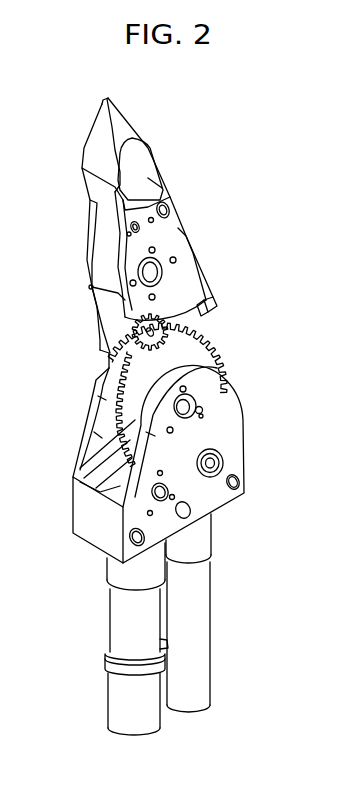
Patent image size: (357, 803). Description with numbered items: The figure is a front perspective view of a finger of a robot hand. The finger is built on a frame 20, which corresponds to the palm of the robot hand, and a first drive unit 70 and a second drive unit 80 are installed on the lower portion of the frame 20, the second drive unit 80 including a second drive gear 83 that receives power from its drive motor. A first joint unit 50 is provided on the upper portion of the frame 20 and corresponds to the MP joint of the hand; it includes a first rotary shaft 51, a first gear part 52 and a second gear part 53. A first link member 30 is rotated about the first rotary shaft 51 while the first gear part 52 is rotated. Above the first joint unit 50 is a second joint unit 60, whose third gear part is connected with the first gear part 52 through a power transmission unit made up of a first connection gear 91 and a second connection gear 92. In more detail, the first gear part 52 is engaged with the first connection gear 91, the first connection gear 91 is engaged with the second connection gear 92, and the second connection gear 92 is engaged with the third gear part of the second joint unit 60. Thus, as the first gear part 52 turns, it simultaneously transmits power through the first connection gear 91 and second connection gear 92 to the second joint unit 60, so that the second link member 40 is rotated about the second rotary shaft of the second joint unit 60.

The frame 20 is at (237, 437).
The first link member 30 is at (197, 322).
The second link member 40 is at (173, 230).
The first joint unit 50 is at (194, 404).
The first rotary shaft 51 is at (197, 412).
The first gear part 52 is at (97, 434).
The second gear part 53 is at (100, 401).
The second joint unit 60 is at (170, 273).
The first drive unit 70 is at (214, 626).
The second drive unit 80 is at (105, 629).
The second drive gear 83 is at (86, 490).
The first connection gear 91 is at (101, 349).
The second connection gear 92 is at (183, 293).